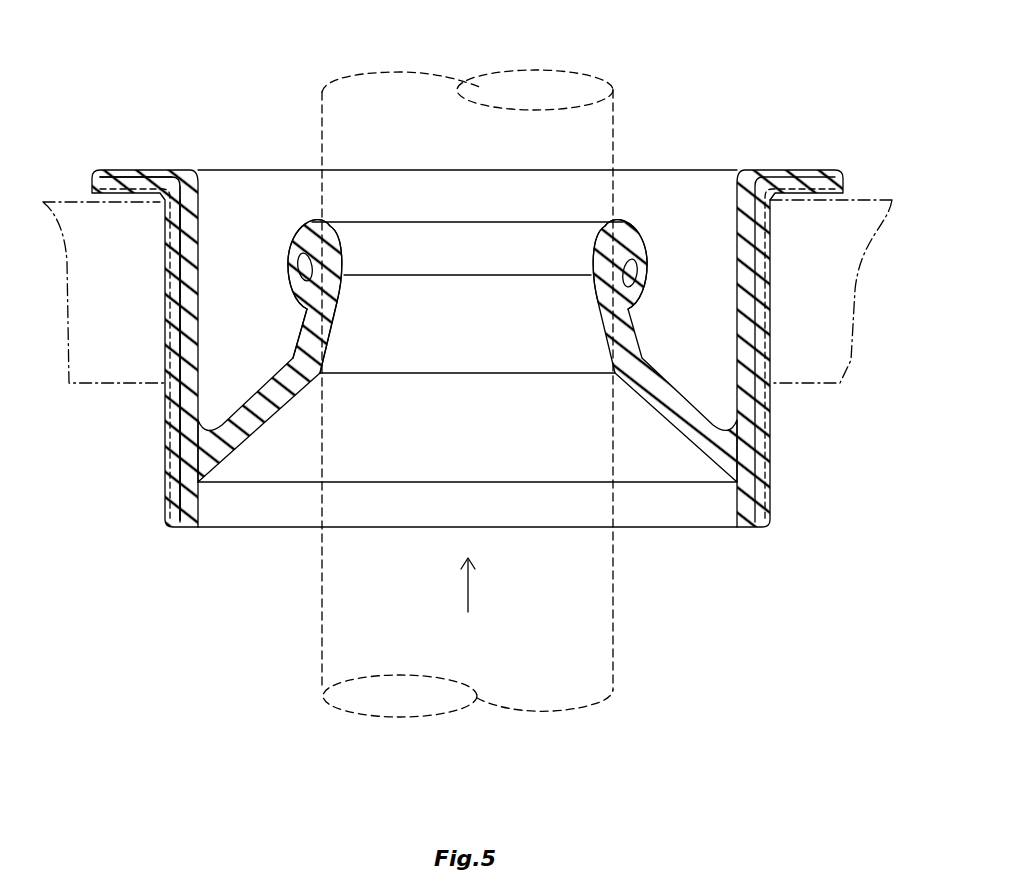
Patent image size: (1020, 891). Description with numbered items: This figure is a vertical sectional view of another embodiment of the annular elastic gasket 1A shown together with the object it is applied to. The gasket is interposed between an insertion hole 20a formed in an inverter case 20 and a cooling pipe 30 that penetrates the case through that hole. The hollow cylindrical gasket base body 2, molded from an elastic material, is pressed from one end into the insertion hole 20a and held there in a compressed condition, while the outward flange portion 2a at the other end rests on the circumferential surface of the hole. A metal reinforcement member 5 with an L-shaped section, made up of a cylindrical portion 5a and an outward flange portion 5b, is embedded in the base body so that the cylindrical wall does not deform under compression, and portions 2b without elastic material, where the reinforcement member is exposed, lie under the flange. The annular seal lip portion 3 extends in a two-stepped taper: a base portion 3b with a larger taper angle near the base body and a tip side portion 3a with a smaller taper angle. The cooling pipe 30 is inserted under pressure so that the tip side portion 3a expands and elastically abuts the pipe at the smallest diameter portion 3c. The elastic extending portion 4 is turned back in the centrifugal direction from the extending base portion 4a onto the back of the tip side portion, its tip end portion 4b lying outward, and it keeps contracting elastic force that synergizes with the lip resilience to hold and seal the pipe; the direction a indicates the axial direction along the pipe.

The annular elastic gasket 1A is at (772, 158).
The gasket base body 2 is at (738, 228).
The outward flange portion 2a is at (143, 176).
The portion without elastic material 2b is at (133, 200).
The annular seal lip portion 3 is at (663, 380).
The tip side portion 3a is at (302, 333).
The base portion 3b is at (252, 425).
The smallest diameter portion 3c is at (447, 272).
The elastic extending portion 4 is at (648, 250).
The extending base portion 4a is at (609, 278).
The tip end portion 4b is at (306, 311).
The reinforcement member 5 is at (165, 112).
The cylindrical portion 5a is at (186, 262).
The outward flange portion 5b is at (154, 184).
The inverter case 20 is at (797, 383).
The insertion hole 20a is at (197, 370).
The cooling pipe 30 is at (615, 607).
The direction of shaft movement a is at (468, 593).